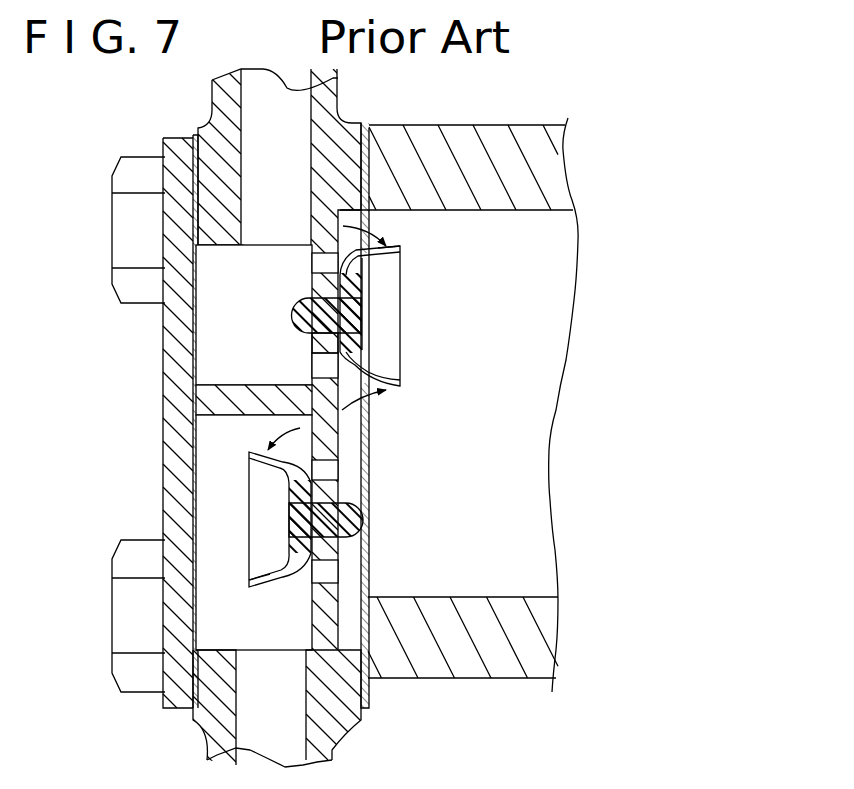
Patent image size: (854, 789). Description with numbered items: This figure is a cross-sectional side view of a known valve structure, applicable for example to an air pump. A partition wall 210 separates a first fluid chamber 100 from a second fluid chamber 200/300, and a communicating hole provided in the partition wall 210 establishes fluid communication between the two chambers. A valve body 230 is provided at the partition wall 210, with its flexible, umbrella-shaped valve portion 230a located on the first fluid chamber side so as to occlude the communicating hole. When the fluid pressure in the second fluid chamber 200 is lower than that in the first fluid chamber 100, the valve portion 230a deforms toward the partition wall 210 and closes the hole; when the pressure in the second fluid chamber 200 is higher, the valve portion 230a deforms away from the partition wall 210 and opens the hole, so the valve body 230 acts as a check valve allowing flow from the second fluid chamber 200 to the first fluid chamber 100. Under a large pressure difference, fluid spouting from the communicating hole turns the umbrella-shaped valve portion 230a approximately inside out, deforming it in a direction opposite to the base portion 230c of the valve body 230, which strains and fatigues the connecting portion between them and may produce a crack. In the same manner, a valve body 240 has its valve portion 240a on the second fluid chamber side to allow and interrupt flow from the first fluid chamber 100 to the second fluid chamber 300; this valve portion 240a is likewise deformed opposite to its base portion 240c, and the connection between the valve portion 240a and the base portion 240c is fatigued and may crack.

The first fluid chamber 100 is at (552, 408).
The second fluid chamber 200 is at (212, 335).
The partition wall 210 is at (318, 294).
The valve body 230 is at (403, 320).
The valve portion 230a is at (405, 262).
The base portion 230c is at (314, 340).
The valve body 240 is at (246, 520).
The valve portion 240a is at (297, 614).
The base portion 240c is at (330, 503).
The second fluid chamber 300 is at (212, 445).